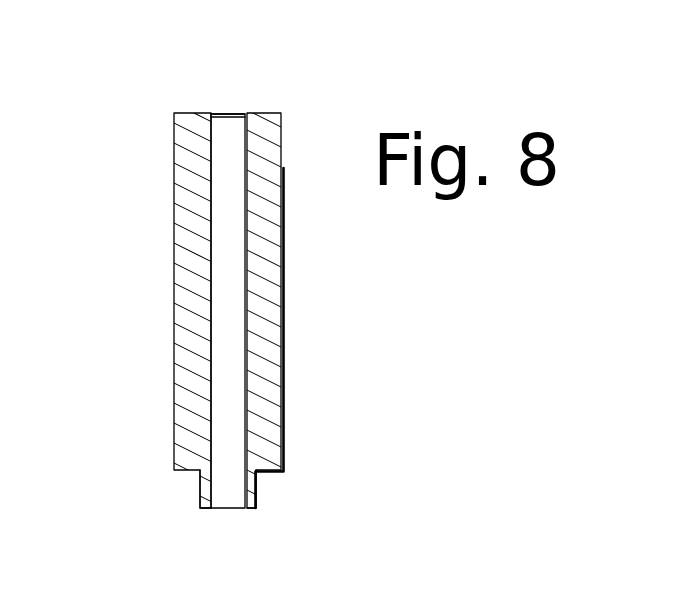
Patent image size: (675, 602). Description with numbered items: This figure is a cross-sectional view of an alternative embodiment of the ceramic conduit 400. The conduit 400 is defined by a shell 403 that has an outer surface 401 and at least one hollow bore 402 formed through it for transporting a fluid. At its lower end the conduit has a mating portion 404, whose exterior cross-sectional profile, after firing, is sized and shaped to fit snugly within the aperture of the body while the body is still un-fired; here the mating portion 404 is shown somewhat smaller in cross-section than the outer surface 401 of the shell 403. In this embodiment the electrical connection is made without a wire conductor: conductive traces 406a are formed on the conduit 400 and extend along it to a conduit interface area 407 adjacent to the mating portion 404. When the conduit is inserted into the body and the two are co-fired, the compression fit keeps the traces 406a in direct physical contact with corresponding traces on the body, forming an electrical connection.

The conduit 400 is at (212, 302).
The outer surface 401 is at (175, 222).
The hollow bore 402 is at (228, 118).
The shell 403 is at (199, 118).
The mating portion 404 is at (207, 490).
The conductive traces 406a is at (285, 312).
The conduit interface area 407 is at (291, 510).